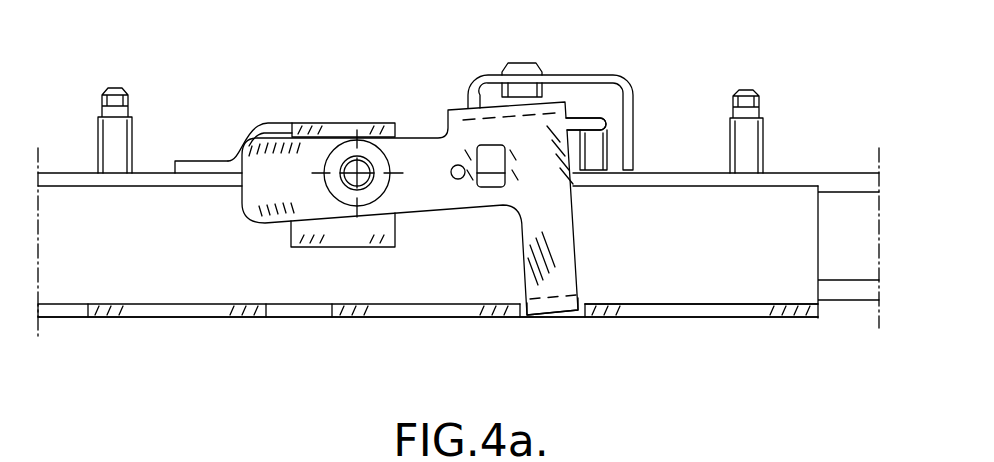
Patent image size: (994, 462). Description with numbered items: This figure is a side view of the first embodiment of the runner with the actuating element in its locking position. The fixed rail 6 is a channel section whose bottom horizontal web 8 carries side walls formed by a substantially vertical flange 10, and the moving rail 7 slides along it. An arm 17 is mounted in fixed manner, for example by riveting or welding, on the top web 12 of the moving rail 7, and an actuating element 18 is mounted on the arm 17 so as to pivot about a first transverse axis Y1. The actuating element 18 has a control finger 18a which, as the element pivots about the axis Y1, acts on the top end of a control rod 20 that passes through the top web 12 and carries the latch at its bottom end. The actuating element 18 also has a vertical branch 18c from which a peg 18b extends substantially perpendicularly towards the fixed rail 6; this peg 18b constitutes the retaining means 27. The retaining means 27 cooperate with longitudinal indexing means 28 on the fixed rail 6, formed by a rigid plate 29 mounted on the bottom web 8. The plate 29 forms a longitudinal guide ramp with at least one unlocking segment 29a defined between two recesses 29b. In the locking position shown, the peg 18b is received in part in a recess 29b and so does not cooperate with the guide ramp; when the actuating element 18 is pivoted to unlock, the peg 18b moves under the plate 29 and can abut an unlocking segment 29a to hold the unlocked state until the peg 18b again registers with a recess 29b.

The fixed rail 6 is at (832, 234).
The moving rail 7 is at (713, 156).
The bottom horizontal web 8 is at (719, 301).
The vertical flange 10 is at (793, 257).
The top web 12 is at (828, 172).
The arm 17 is at (377, 125).
The actuating element 18 is at (430, 153).
The control finger 18a is at (592, 123).
The peg 18b is at (540, 305).
The vertical branch 18c is at (558, 257).
The control rod 20 is at (593, 157).
The retaining means 27 is at (513, 290).
The longitudinal indexing means 28 is at (101, 330).
The rigid plate 29 is at (745, 318).
The unlocking segment 29a is at (168, 312).
The recess 29b is at (62, 312).
The first transverse axis Y1 is at (356, 171).